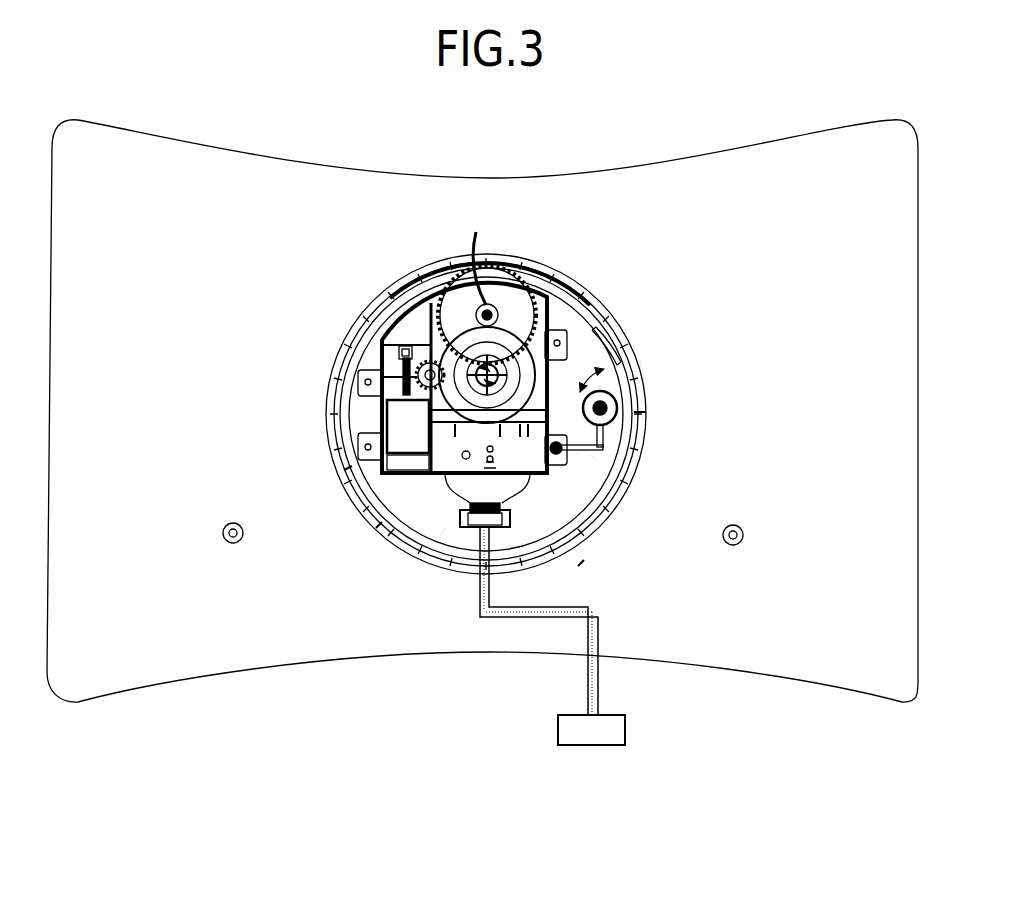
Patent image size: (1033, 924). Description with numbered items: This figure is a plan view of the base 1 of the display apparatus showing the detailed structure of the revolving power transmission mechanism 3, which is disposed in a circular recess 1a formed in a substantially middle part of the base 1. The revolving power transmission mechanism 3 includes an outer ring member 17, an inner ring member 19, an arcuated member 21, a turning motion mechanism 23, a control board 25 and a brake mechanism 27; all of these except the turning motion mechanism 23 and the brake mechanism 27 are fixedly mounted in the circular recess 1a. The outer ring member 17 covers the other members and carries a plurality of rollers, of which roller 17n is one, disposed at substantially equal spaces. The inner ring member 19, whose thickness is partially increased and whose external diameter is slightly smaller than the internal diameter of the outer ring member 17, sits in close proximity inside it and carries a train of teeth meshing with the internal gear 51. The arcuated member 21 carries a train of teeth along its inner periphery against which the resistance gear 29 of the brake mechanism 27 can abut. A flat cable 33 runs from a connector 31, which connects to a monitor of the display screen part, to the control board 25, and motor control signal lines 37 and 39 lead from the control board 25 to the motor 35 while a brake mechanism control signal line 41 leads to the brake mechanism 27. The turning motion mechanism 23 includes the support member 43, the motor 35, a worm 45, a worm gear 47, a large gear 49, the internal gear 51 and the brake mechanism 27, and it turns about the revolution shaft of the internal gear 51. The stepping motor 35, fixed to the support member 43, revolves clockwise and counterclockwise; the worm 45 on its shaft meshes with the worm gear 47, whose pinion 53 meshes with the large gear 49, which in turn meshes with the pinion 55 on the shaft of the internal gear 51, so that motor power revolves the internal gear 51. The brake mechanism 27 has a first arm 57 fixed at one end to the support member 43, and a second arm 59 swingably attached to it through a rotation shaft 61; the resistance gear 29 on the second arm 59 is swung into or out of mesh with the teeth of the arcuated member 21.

The base 1 is at (643, 242).
The circular recess 1a is at (648, 378).
The revolving power transmission mechanism 3 is at (308, 352).
The outer ring member 17 is at (572, 290).
The roller 17n is at (380, 530).
The inner ring member 19 is at (387, 289).
The arcuated member 21 is at (566, 340).
The turning motion mechanism 23 is at (364, 408).
The control board 25 is at (472, 535).
The brake mechanism 27 is at (597, 460).
The resistance gear 29 is at (618, 412).
The connector 31 is at (595, 746).
The cable 33 is at (537, 618).
The motor 35 is at (378, 466).
The motor control signal line 37 is at (410, 520).
The motor control signal line 39 is at (450, 520).
The brake mechanism control signal line 41 is at (548, 558).
The support member 43 is at (535, 286).
The worm 45 is at (370, 378).
The worm gear 47 is at (396, 352).
The large gear 49 is at (562, 332).
The internal gear 51 is at (462, 270).
The pinion 53 is at (400, 300).
The pinion 55 is at (479, 262).
The first arm 57 is at (580, 455).
The second arm 59 is at (565, 452).
The rotation shaft 61 is at (600, 452).